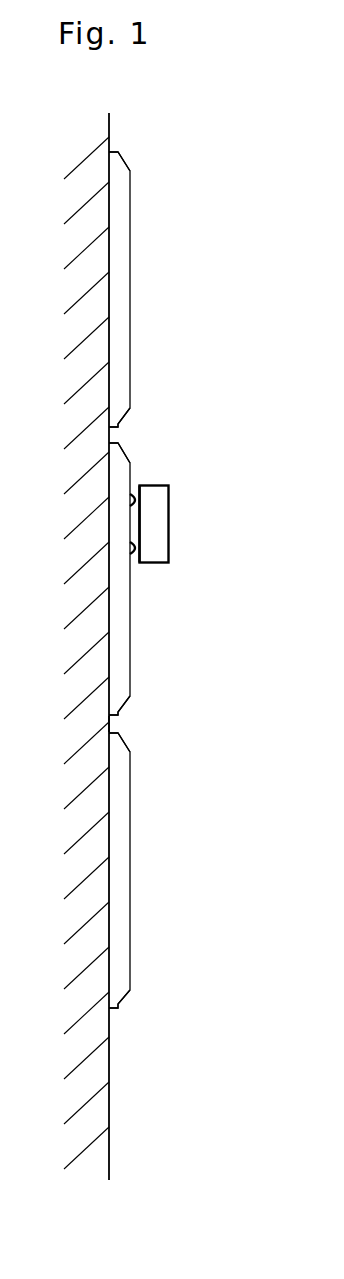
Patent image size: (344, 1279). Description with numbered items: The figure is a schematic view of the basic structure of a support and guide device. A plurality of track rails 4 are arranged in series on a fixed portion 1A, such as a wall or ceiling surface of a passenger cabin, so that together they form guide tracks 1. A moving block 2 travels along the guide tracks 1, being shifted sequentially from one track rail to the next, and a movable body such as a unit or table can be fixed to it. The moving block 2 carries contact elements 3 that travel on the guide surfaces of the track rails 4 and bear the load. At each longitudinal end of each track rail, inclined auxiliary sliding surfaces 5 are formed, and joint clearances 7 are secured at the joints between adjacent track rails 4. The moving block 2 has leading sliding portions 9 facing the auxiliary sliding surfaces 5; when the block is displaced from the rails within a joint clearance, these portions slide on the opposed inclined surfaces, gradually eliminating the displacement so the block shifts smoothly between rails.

The guide tracks 1 is at (172, 433).
The fixed portion 1A is at (82, 923).
The moving block 2 is at (170, 515).
The contact elements 3 is at (134, 530).
The track rails 4 is at (124, 366).
The auxiliary sliding surfaces 5 is at (130, 165).
The joint clearances 7 is at (124, 723).
The leading sliding portions 9 is at (138, 492).